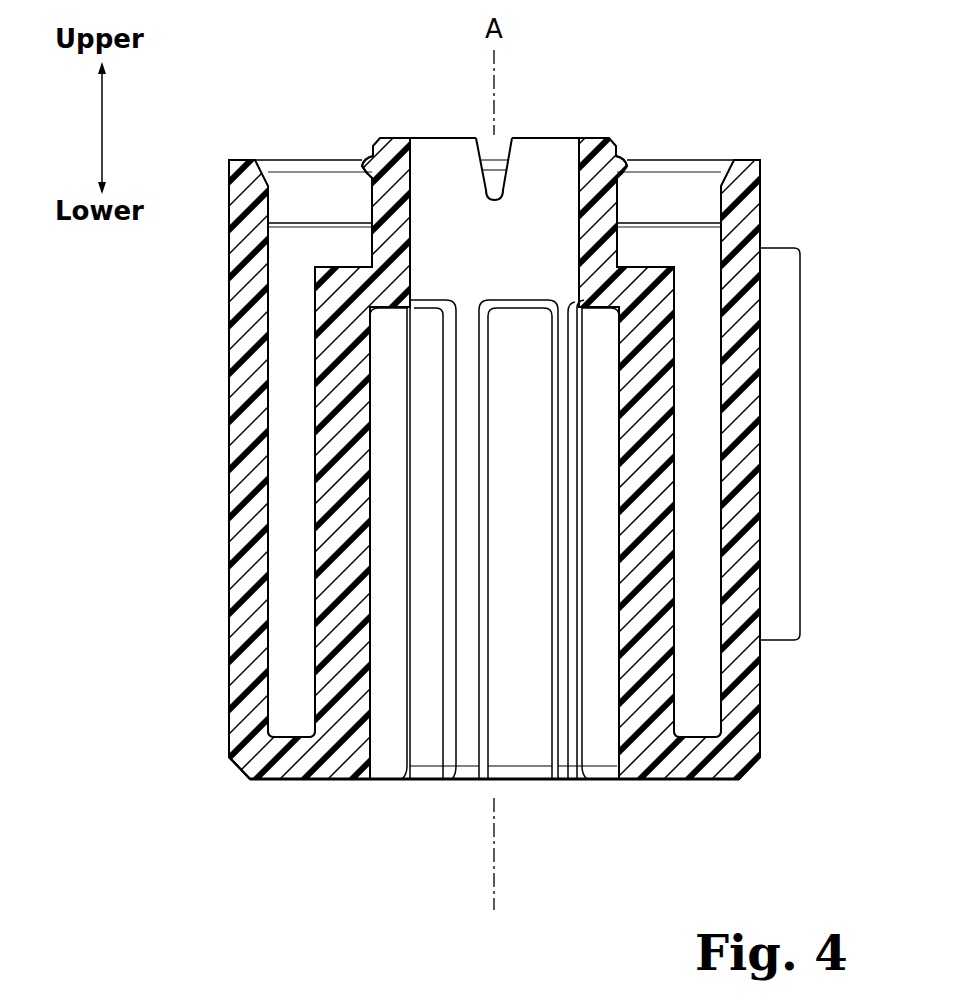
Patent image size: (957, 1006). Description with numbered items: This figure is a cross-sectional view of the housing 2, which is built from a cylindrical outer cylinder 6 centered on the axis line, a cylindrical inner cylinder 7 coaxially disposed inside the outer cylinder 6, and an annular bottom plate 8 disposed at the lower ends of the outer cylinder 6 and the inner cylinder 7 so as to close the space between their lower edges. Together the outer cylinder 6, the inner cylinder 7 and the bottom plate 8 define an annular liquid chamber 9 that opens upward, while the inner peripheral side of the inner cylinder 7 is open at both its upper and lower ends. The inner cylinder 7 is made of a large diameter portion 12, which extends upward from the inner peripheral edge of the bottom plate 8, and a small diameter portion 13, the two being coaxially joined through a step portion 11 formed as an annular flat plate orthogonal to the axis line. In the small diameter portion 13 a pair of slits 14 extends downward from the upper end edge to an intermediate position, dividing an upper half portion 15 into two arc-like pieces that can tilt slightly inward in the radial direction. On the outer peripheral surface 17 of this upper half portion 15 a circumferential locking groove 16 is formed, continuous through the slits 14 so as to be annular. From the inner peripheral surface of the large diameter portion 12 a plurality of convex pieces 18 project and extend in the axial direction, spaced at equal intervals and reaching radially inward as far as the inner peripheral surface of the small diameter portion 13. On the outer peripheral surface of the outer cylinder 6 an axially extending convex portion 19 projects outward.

The housing 2 is at (762, 146).
The outer cylinder 6 is at (230, 353).
The inner cylinder 7 is at (372, 713).
The bottom plate 8 is at (287, 768).
The liquid chamber 9 is at (277, 557).
The step portion 11 is at (343, 272).
The large diameter portion 12 is at (318, 444).
The small diameter portion 13 is at (460, 235).
The slits 14 is at (504, 148).
The upper half portion 15 is at (550, 153).
The locking groove 16 is at (368, 200).
The outer peripheral surface 17 is at (387, 172).
The convex pieces 18 is at (473, 733).
The convex portion 19 is at (800, 540).